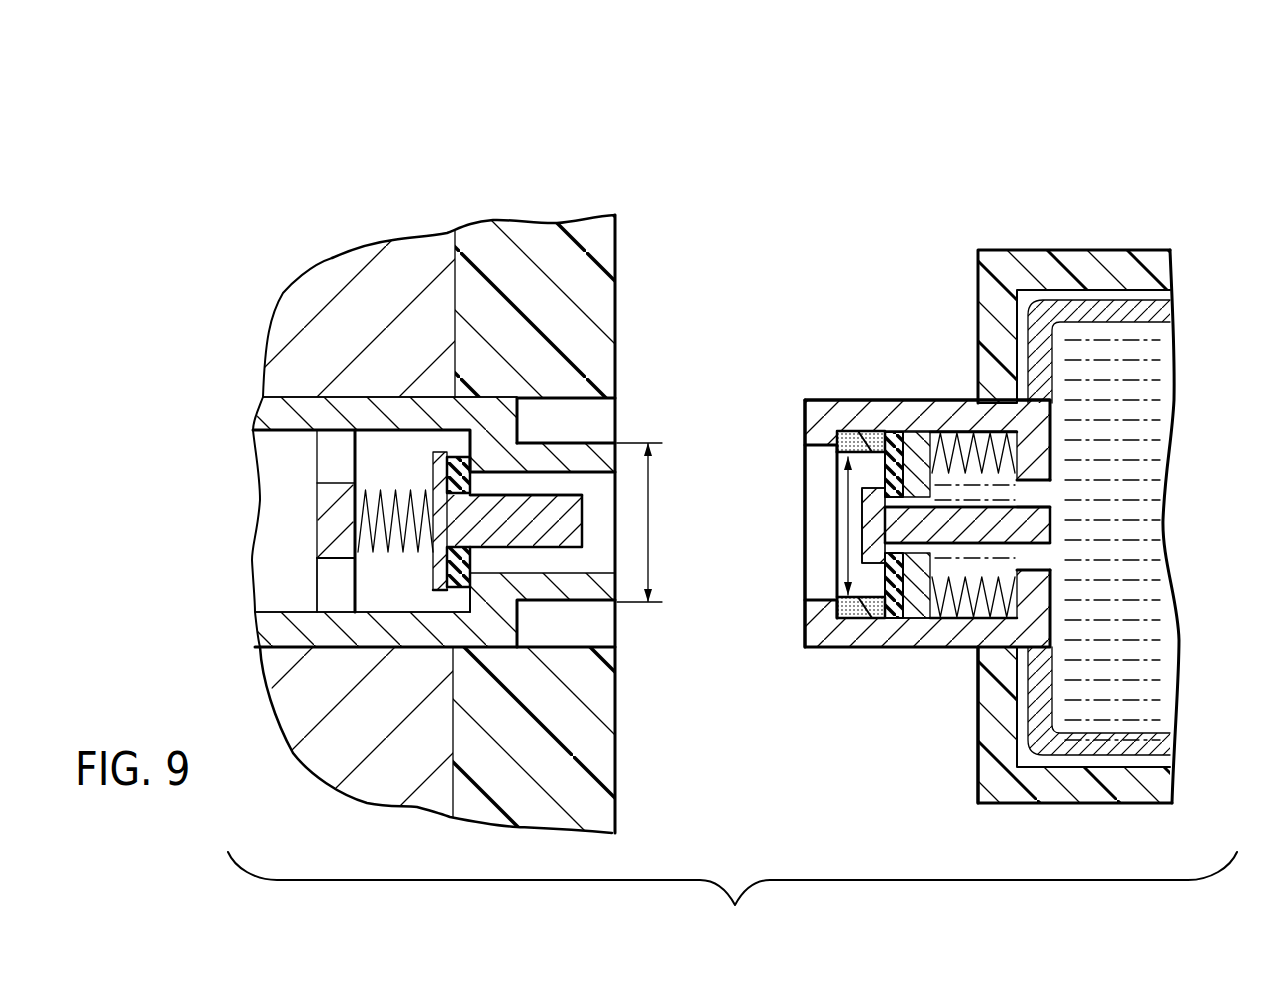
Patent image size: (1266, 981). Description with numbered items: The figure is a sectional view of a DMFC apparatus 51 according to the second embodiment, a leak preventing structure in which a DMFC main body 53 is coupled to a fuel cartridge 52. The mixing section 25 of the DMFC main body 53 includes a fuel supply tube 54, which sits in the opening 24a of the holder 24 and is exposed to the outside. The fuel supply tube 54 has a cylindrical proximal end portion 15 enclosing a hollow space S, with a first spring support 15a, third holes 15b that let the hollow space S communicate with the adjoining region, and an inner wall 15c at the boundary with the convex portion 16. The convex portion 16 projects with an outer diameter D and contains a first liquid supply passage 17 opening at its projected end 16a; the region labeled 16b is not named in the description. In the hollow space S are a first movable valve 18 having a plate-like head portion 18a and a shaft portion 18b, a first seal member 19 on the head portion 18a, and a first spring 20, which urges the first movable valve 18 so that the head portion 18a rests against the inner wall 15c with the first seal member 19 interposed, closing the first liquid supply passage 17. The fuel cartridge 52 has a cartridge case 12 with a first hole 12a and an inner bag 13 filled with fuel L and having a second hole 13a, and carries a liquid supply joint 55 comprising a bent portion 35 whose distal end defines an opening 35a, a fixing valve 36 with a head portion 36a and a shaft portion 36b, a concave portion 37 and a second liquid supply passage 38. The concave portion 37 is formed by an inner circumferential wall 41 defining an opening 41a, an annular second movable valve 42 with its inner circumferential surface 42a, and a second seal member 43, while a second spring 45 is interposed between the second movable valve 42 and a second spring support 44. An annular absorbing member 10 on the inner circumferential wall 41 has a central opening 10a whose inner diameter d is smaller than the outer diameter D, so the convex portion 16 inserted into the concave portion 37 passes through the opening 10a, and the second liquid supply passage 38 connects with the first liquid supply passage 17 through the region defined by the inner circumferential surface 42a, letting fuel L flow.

The DMFC main body 53 is at (437, 441).
The mixing section 25 is at (353, 493).
The fuel supply tube 54 is at (386, 421).
The proximal end portion 15 is at (359, 401).
The first spring support 15a is at (325, 520).
The third holes 15b is at (340, 612).
The inner wall 15c is at (465, 608).
The head portion 18a is at (445, 457).
The first seal member 19 is at (440, 460).
The first movable valve 18 is at (514, 356).
The shaft portion 18b is at (533, 507).
The holder 24 is at (439, 260).
The opening 24a is at (583, 404).
The convex portion 16 is at (453, 508).
The projected end 16a is at (610, 596).
The guide recess 16b is at (590, 607).
The first liquid supply passage 17 is at (612, 705).
The first spring 20 is at (383, 553).
The hollow space S is at (373, 458).
The outer diameter D is at (656, 522).
The DMFC apparatus 51 is at (926, 338).
The fuel cartridge 52 is at (1078, 441).
The cartridge case 12 is at (1077, 494).
The first hole 12a is at (982, 680).
The inner bag 13 is at (1173, 314).
The second hole 13a is at (1048, 662).
The liquid supply joint 55 is at (927, 349).
The absorbing member 10 is at (869, 430).
The opening 10a is at (873, 620).
The concave portion 37 is at (891, 406).
The second movable valve 42 is at (906, 612).
The second seal member 43 is at (894, 433).
The inner circumferential surface 42a is at (915, 606).
The fixing valve 36 is at (956, 435).
The head portion 36a is at (860, 530).
The shaft portion 36b is at (1040, 523).
The inner circumferential wall 41 is at (837, 400).
The opening 41a is at (840, 647).
The bent portion 35 is at (820, 633).
The opening 35a is at (820, 596).
The second spring support 44 is at (1040, 448).
The second spring 45 is at (1032, 562).
The second liquid supply passage 38 is at (1035, 488).
The fuel L is at (1142, 530).
The inner diameter d is at (840, 505).